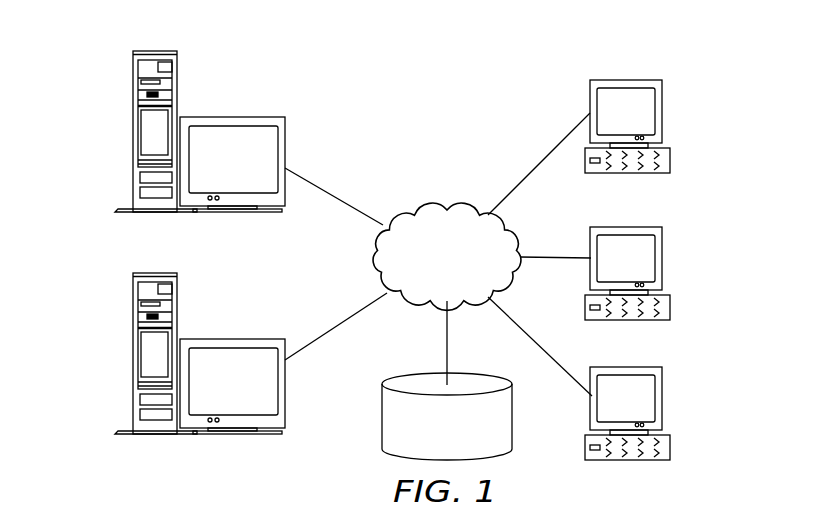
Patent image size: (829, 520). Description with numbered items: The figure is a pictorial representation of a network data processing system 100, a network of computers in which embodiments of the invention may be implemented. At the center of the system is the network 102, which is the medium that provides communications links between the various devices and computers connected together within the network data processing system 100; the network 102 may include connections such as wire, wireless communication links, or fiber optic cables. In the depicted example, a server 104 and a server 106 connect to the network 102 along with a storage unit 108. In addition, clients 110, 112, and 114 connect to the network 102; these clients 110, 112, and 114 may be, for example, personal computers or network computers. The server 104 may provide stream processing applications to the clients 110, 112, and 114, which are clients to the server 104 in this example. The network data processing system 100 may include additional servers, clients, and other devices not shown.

The network data processing system 100 is at (499, 90).
The network 102 is at (417, 206).
The server 104 is at (133, 135).
The server 106 is at (133, 357).
The storage unit 108 is at (382, 428).
The client 110 is at (663, 112).
The client 112 is at (665, 258).
The client 114 is at (665, 400).